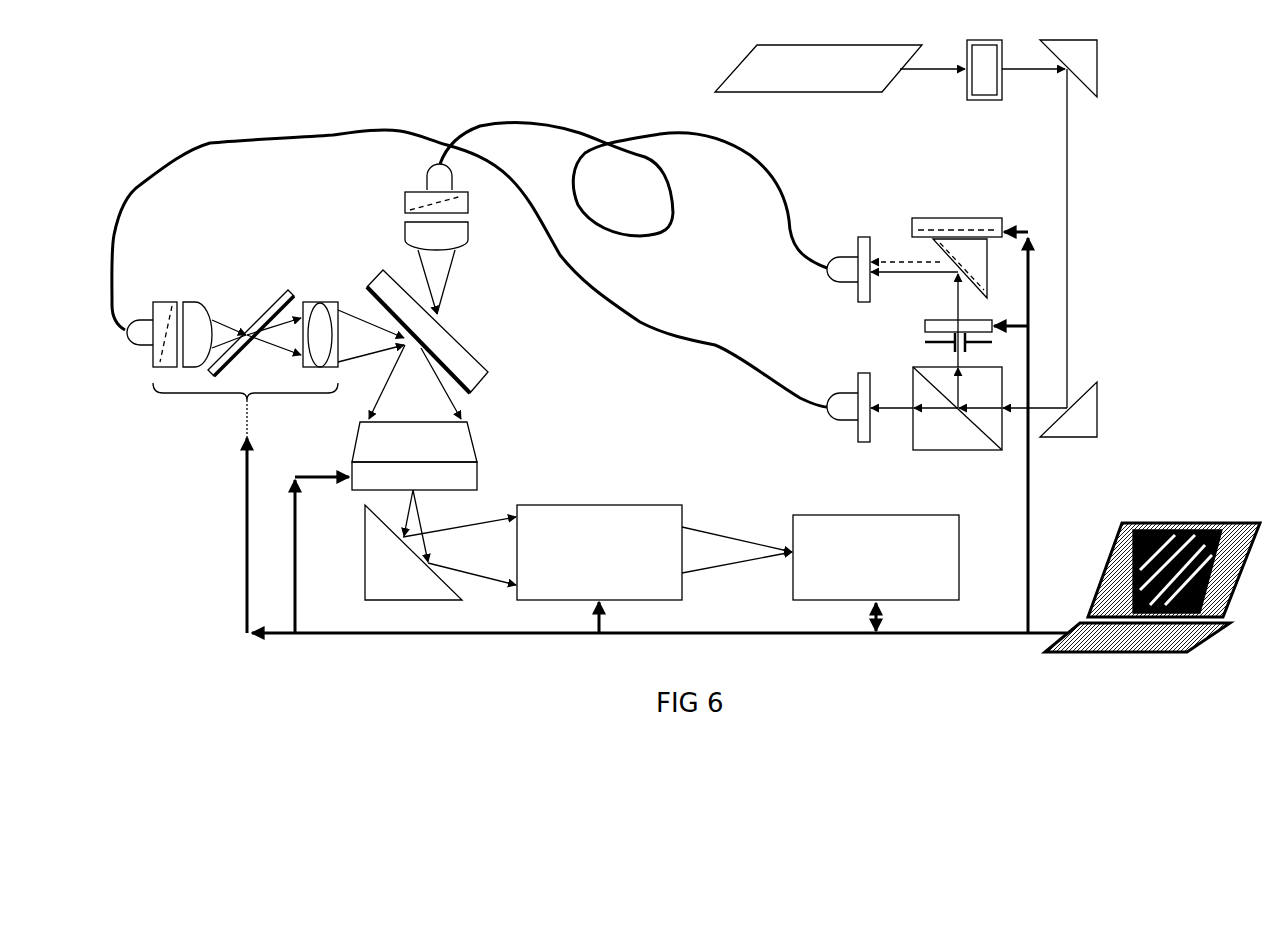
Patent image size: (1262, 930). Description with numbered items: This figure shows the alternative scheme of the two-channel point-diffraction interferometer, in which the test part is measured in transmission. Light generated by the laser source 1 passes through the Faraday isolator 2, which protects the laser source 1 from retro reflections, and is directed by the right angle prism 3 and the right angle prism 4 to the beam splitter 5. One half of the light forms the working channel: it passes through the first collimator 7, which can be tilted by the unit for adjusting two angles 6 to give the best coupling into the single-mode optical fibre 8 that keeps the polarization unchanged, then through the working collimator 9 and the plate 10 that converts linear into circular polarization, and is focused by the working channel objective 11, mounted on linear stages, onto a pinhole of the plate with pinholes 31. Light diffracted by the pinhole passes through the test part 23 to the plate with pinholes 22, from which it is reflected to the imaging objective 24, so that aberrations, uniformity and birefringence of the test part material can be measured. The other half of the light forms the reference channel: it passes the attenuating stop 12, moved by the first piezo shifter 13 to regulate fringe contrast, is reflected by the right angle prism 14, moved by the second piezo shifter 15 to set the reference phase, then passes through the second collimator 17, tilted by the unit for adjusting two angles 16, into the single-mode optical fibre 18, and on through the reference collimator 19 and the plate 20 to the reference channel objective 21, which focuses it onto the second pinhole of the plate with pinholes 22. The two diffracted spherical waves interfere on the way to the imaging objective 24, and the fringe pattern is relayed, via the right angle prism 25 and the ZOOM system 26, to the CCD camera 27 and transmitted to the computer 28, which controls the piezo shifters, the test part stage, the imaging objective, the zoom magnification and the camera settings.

The laser source 1 is at (816, 68).
The Faraday isolator 2 is at (971, 69).
The right angle prism 3 is at (1057, 68).
The right angle prism 4 is at (1068, 398).
The beam splitter 5 is at (945, 408).
The unit for adjusting two angles 6 is at (859, 398).
The first collimator 7 is at (837, 399).
The single-mode optical fibre keeping polarization of light unchanged 8 is at (469, 257).
The working collimator 9 is at (140, 322).
The plate (λ/4) 10 is at (165, 324).
The working channel objective 11 is at (197, 324).
The attenuating stop 12 is at (945, 343).
The first piezo shifter 13 is at (963, 323).
The right angle prism 14 is at (943, 268).
The second piezo shifter 15 is at (963, 217).
The unit for adjusting two angles 16 is at (855, 258).
The second collimator 17 is at (832, 260).
The single-mode optical fibre keeping polarization of light unchanged 18 is at (633, 187).
The reference collimator 19 is at (424, 175).
The plate (λ/4) 20 is at (419, 202).
The reference channel objective 21 is at (419, 235).
The plate with pinholes 22 is at (424, 323).
The test part 23 is at (320, 324).
The imaging objective 24 is at (397, 456).
The right angle prism 25 is at (397, 552).
The ZOOM system 26 is at (584, 552).
The CCD camera 27 is at (860, 557).
The computer 28 is at (1152, 587).
The plate with pinholes 31 is at (251, 328).